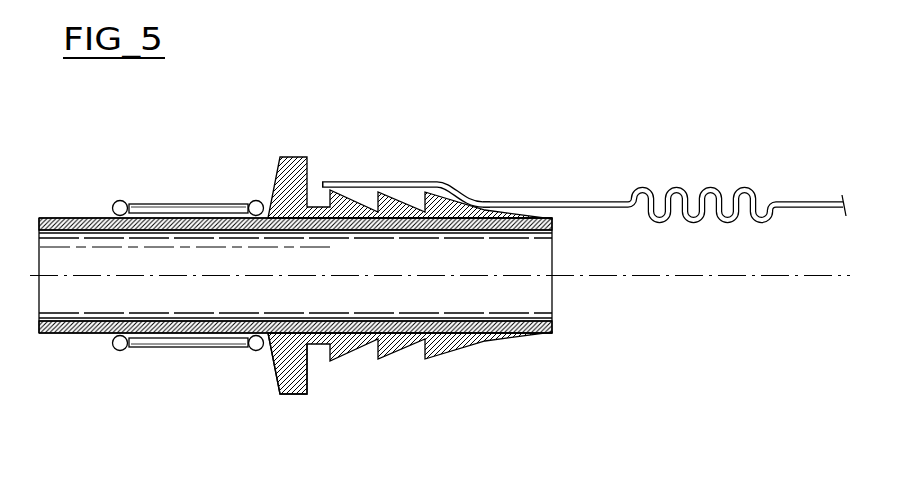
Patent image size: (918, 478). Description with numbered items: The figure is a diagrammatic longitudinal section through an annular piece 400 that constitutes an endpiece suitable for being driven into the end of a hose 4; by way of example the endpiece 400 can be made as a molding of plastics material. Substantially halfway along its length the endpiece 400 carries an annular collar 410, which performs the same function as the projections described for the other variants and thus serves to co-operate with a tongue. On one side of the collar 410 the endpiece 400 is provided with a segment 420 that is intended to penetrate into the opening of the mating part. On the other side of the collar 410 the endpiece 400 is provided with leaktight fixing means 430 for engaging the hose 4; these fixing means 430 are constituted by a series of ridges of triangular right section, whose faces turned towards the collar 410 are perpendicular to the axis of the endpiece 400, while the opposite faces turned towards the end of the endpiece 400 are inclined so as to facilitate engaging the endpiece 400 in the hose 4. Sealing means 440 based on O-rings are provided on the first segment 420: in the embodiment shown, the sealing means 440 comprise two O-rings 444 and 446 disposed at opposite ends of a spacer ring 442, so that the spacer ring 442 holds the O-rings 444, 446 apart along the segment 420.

The hose 4 is at (800, 201).
The annular piece 400 is at (270, 157).
The annular collar 410 is at (295, 388).
The segment 420 is at (151, 198).
The leaktight fixing means 430 is at (461, 184).
The sealing means 440 is at (169, 350).
The spacer ring 442 is at (208, 348).
The O-ring 444 is at (113, 348).
The O-ring 446 is at (249, 205).